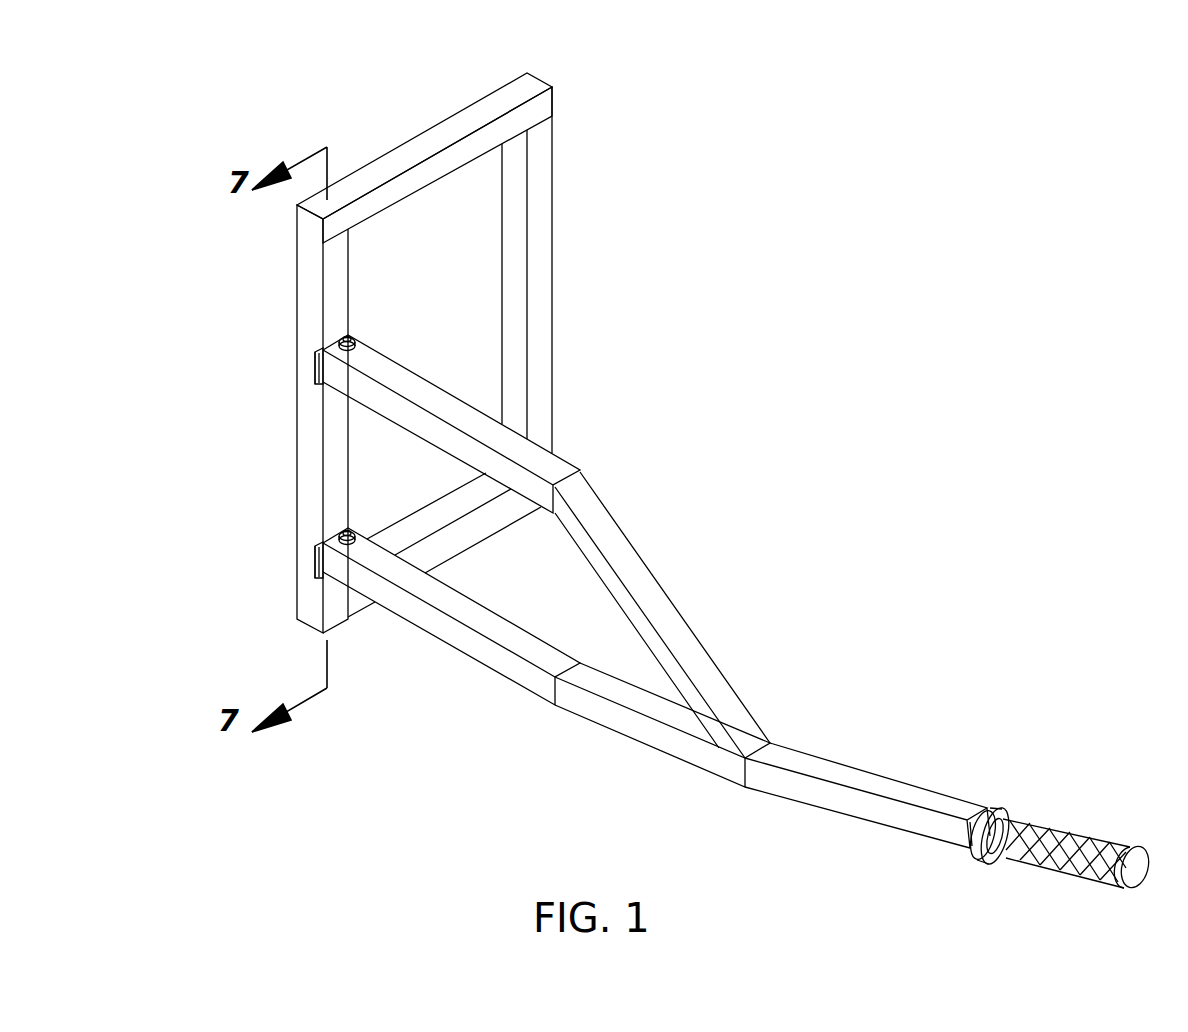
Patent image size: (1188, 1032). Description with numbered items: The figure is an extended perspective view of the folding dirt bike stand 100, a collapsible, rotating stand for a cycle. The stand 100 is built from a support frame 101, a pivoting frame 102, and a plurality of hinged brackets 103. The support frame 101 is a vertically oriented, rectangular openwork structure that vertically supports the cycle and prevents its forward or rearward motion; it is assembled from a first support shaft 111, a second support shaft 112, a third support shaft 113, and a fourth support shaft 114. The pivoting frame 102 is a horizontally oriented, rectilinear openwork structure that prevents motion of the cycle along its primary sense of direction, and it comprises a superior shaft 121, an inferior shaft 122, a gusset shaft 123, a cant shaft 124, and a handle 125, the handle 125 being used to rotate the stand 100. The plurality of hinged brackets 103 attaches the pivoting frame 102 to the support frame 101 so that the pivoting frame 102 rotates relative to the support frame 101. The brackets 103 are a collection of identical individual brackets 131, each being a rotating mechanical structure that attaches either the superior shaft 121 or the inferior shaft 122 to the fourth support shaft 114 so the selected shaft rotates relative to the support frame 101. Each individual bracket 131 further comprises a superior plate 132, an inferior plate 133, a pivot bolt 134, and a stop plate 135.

The folding dirt bike stand 100 is at (793, 323).
The support frame 101 is at (557, 256).
The pivoting frame 102 is at (678, 608).
The plurality of hinged brackets 103 is at (346, 394).
The first support shaft 111 is at (482, 104).
The second support shaft 112 is at (557, 192).
The third support shaft 113 is at (469, 554).
The fourth support shaft 114 is at (299, 438).
The superior shaft 121 is at (425, 378).
The inferior shaft 122 is at (604, 730).
The gusset shaft 123 is at (617, 523).
The cant shaft 124 is at (877, 771).
The handle 125 is at (1060, 826).
The individual bracket 131 is at (303, 528).
The superior plate 132 is at (353, 338).
The inferior plate 133 is at (323, 406).
The pivot bolt 134 is at (342, 338).
The stop plate 135 is at (315, 353).